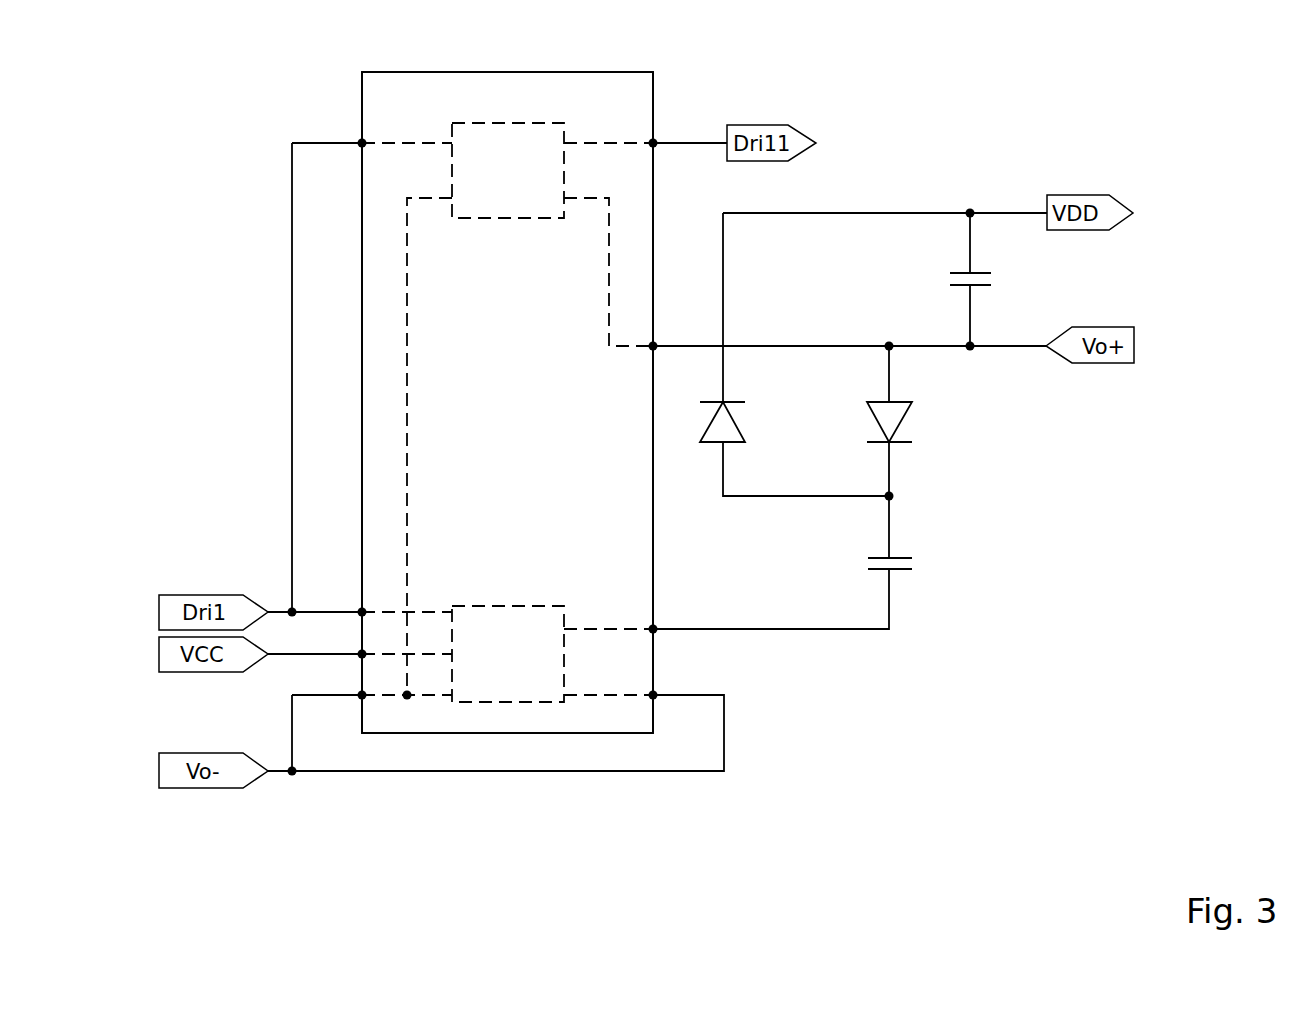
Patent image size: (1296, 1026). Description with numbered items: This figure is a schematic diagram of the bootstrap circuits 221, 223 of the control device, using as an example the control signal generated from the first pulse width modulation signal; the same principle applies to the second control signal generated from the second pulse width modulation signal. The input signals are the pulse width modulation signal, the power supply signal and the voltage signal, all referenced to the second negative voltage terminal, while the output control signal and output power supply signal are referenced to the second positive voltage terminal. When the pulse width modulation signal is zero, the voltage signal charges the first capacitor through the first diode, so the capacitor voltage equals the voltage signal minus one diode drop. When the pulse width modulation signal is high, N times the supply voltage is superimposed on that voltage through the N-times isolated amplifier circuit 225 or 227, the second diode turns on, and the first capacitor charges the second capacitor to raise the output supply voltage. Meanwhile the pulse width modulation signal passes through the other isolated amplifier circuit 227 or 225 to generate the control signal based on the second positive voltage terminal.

The bootstrap circuit 221 is at (545, 80).
The bootstrap circuit 223 is at (545, 80).
The N-times isolated amplifier circuit 225 is at (490, 122).
The isolated amplifier circuit 227 is at (508, 605).